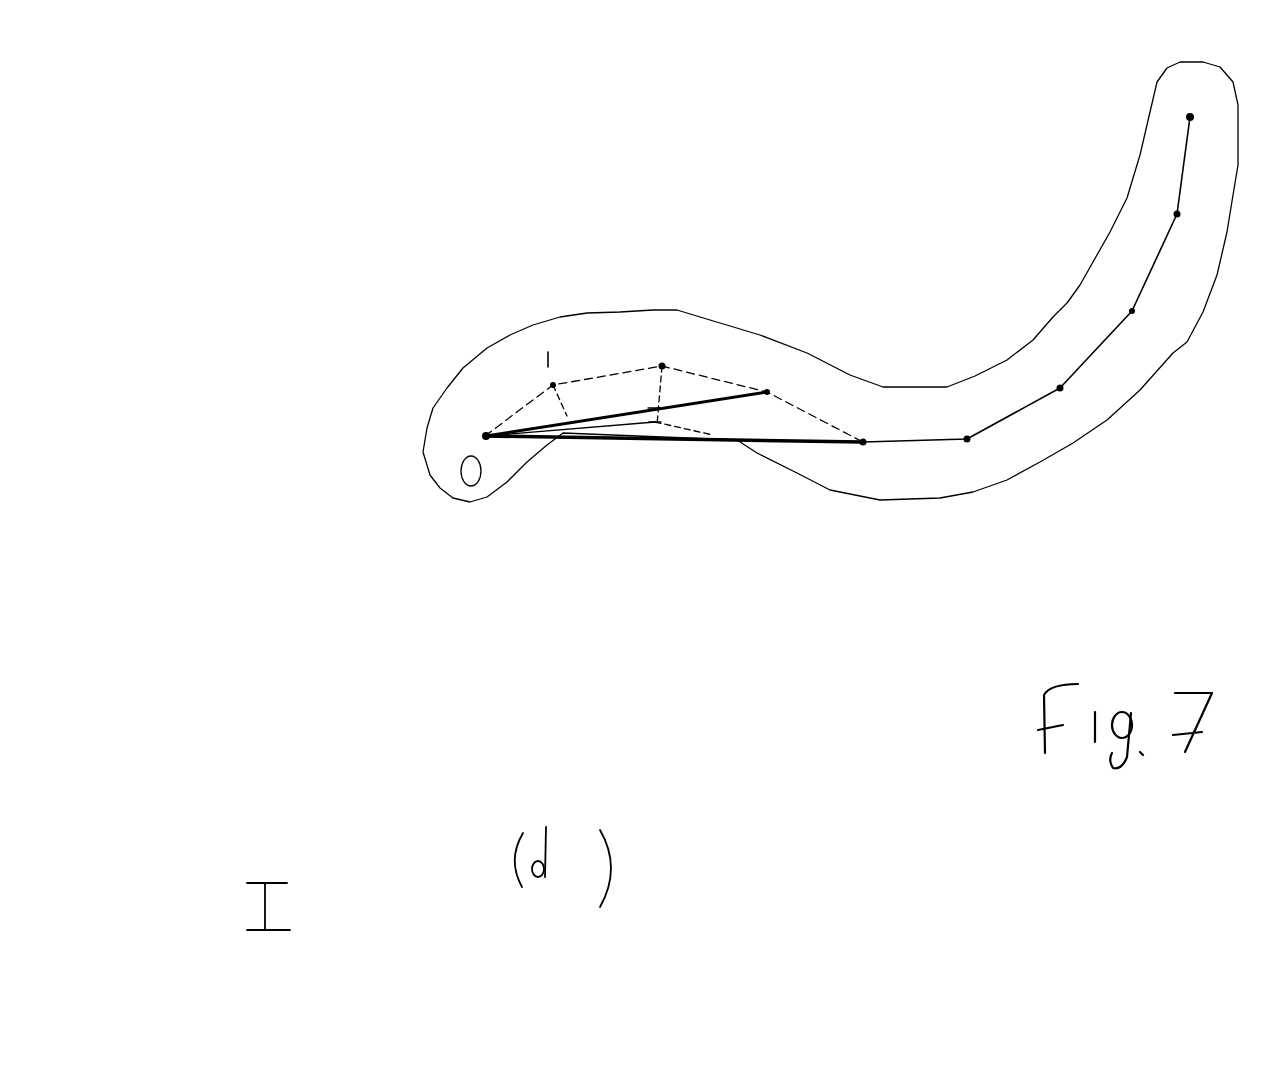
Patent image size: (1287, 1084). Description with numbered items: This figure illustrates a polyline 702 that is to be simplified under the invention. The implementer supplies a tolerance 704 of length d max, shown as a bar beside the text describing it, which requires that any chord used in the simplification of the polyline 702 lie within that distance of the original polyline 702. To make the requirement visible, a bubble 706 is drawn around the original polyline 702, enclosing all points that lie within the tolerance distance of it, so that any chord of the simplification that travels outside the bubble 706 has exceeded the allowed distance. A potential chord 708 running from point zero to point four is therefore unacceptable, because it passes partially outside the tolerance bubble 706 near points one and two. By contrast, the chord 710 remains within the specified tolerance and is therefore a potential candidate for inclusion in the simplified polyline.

The polyline 702 is at (1063, 337).
The tolerance 704 is at (247, 848).
The bubble 706 is at (448, 402).
The potential chord 708 is at (623, 448).
The chord 710 is at (690, 393).